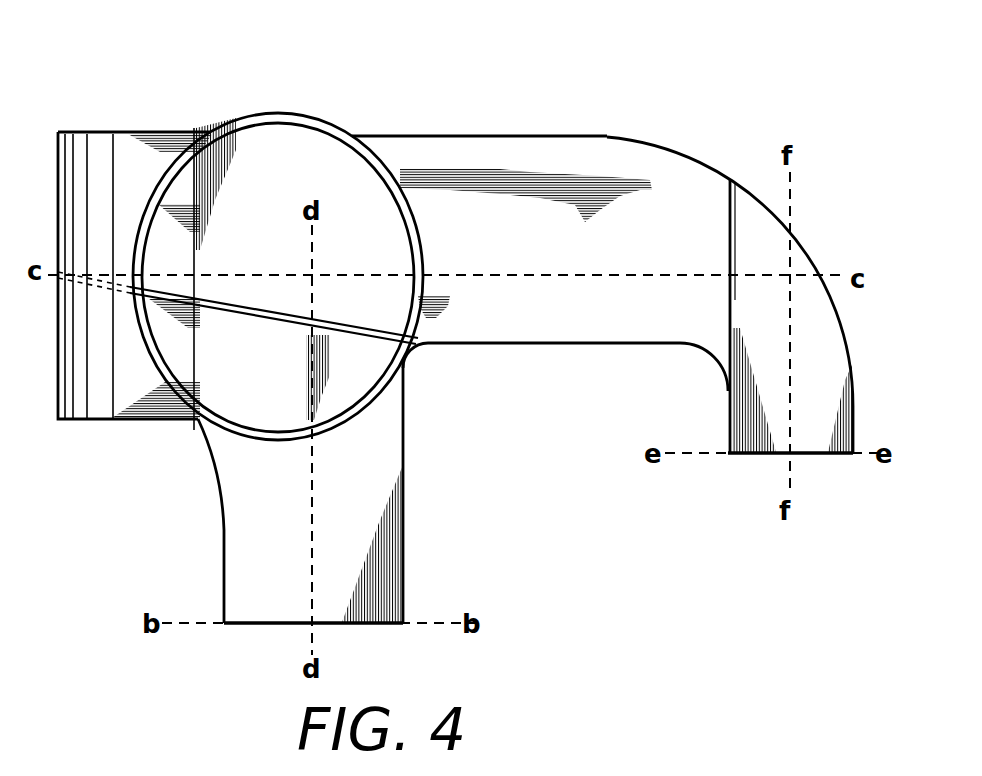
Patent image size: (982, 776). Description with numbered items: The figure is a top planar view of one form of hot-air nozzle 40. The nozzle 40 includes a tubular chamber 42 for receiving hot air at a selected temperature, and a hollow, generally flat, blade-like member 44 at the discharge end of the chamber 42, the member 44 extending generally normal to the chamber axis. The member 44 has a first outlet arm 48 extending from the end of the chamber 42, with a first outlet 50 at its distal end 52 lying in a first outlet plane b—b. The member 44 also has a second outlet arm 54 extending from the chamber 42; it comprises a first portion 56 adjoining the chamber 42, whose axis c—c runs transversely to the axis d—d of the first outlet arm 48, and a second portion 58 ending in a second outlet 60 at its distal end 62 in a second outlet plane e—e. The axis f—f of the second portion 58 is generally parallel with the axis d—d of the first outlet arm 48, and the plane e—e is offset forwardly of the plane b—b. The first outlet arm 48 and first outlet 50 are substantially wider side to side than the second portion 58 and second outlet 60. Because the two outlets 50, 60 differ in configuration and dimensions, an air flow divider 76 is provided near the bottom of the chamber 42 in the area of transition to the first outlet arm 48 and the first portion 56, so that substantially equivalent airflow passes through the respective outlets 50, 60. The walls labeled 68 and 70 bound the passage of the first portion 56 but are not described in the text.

The nozzle 40 is at (475, 100).
The tubular chamber 42 is at (320, 118).
The blade-like member 44 is at (608, 137).
The first outlet arm 48 is at (232, 575).
The first outlet 50 is at (370, 624).
The distal end 52 is at (410, 612).
The second outlet arm 54 is at (718, 172).
The first portion 56 is at (560, 256).
The second portion 58 is at (852, 392).
The second outlet 60 is at (820, 455).
The distal end 62 is at (722, 425).
The top wall 68 is at (538, 137).
The lower wall 70 is at (566, 344).
The air flow divider 76 is at (272, 318).